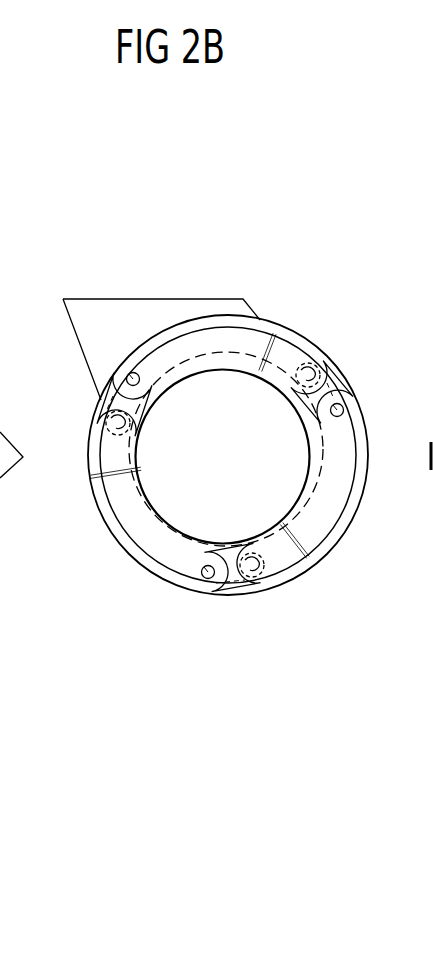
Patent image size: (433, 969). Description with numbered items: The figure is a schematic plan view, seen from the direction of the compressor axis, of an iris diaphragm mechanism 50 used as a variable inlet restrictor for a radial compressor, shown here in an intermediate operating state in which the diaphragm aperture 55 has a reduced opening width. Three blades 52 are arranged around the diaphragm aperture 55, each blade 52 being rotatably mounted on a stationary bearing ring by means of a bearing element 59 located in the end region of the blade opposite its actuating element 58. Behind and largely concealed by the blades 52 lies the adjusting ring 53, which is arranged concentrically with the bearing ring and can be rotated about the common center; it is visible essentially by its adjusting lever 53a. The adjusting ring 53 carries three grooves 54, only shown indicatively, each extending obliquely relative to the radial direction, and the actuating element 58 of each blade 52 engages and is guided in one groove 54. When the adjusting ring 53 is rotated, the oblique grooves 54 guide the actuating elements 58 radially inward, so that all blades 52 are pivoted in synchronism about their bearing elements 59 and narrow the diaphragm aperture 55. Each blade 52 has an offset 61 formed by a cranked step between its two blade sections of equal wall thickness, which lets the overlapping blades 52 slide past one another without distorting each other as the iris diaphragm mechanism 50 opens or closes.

The iris diaphragm mechanism 50 is at (261, 209).
The blade 52 is at (231, 348).
The adjusting ring 53 is at (357, 485).
The adjusting lever 53a is at (120, 318).
The groove 54 is at (326, 331).
The diaphragm aperture 55 is at (218, 478).
The actuating element 58 is at (313, 375).
The bearing element 59 is at (133, 379).
The offset 61 is at (268, 332).